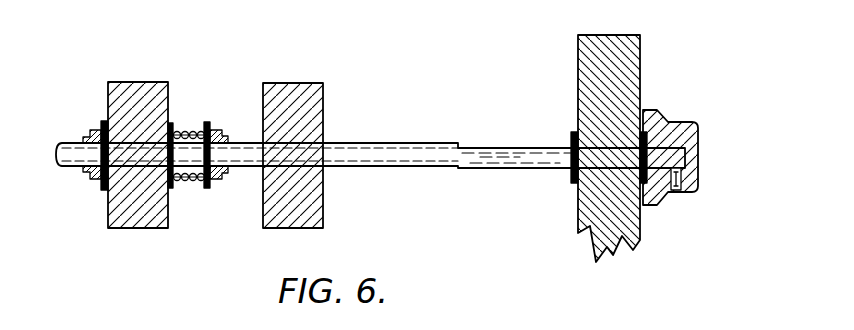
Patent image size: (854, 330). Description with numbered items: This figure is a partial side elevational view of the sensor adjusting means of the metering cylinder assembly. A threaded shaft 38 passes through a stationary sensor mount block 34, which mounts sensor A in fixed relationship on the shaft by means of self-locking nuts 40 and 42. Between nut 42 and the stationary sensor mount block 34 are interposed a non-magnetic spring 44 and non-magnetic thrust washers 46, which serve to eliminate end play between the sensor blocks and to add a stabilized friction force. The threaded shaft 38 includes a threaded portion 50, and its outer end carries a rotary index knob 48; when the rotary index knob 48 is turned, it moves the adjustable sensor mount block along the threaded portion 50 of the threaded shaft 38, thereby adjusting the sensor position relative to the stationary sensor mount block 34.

The stationary sensor mount block 34 is at (130, 90).
The threaded shaft 38 is at (472, 149).
The self-locking nut 40 is at (96, 131).
The self-locking nut 42 is at (218, 130).
The non-magnetic spring 44 is at (186, 130).
The non-magnetic thrust washers 46 is at (172, 187).
The rotary index knob 48 is at (710, 78).
The threaded portion 50 is at (378, 144).